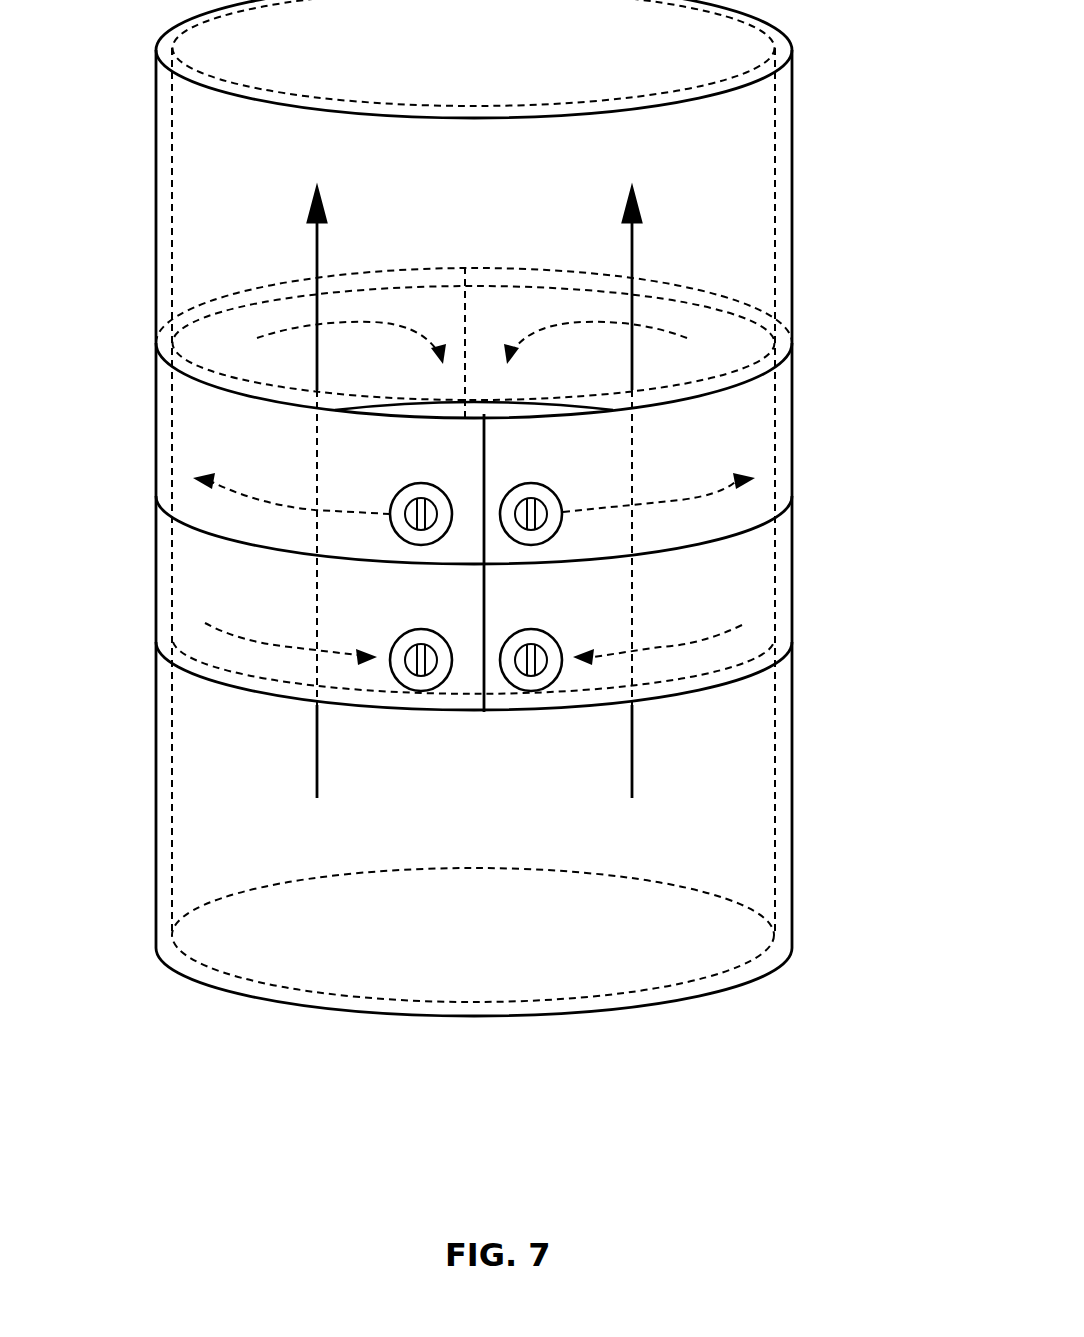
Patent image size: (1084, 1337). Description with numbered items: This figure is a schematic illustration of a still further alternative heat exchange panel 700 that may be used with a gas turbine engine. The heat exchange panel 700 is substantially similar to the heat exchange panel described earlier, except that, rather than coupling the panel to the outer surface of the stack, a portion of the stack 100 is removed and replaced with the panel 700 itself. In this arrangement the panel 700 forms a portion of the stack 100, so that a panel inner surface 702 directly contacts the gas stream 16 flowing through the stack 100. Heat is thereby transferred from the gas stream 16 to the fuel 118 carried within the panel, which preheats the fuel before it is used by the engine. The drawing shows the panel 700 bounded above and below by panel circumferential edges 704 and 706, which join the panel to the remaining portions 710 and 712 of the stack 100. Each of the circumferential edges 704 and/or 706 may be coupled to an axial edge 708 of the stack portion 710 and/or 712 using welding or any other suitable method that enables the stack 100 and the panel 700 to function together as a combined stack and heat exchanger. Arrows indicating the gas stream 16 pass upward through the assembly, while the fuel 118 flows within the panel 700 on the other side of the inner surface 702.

The stack portion 712 is at (777, 155).
The stack 100 is at (792, 417).
The stack portion 710 is at (790, 820).
The panel circumferential edge 704 is at (173, 377).
The heat exchange panel 700 is at (790, 558).
The panel circumferential edge 706 is at (185, 670).
The axial edge 708 is at (268, 400).
The panel inner surface 702 is at (747, 360).
The gas stream 16 is at (627, 440).
The fuel 118 is at (378, 320).